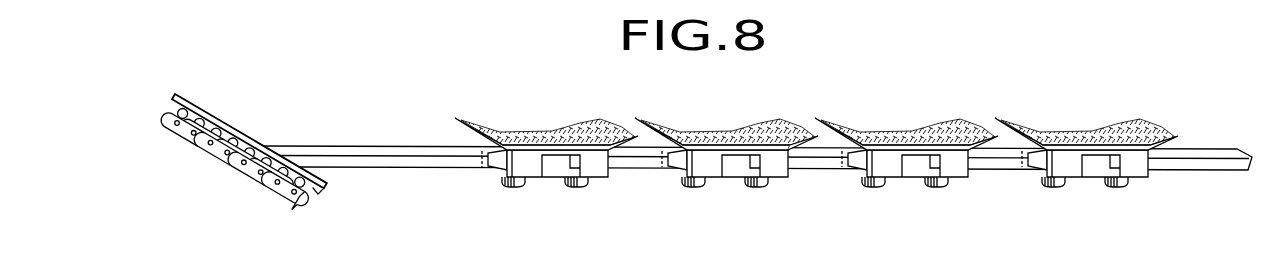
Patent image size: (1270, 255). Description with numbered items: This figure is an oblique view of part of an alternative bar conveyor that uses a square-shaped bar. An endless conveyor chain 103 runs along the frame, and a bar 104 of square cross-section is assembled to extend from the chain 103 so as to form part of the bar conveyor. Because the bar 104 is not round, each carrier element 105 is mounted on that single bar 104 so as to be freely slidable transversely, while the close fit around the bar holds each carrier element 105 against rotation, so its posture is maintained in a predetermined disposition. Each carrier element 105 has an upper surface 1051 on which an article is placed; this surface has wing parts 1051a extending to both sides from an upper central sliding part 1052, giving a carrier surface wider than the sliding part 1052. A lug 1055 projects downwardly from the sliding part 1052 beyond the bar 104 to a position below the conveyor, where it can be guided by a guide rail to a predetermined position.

The endless conveyor chain 103 is at (218, 137).
The bar 104 is at (360, 144).
The carrier element 105 is at (547, 128).
The upper surface 1051 is at (725, 171).
The wing part 1051a is at (816, 176).
The sliding part 1052 is at (725, 194).
The lug 1055 is at (668, 200).